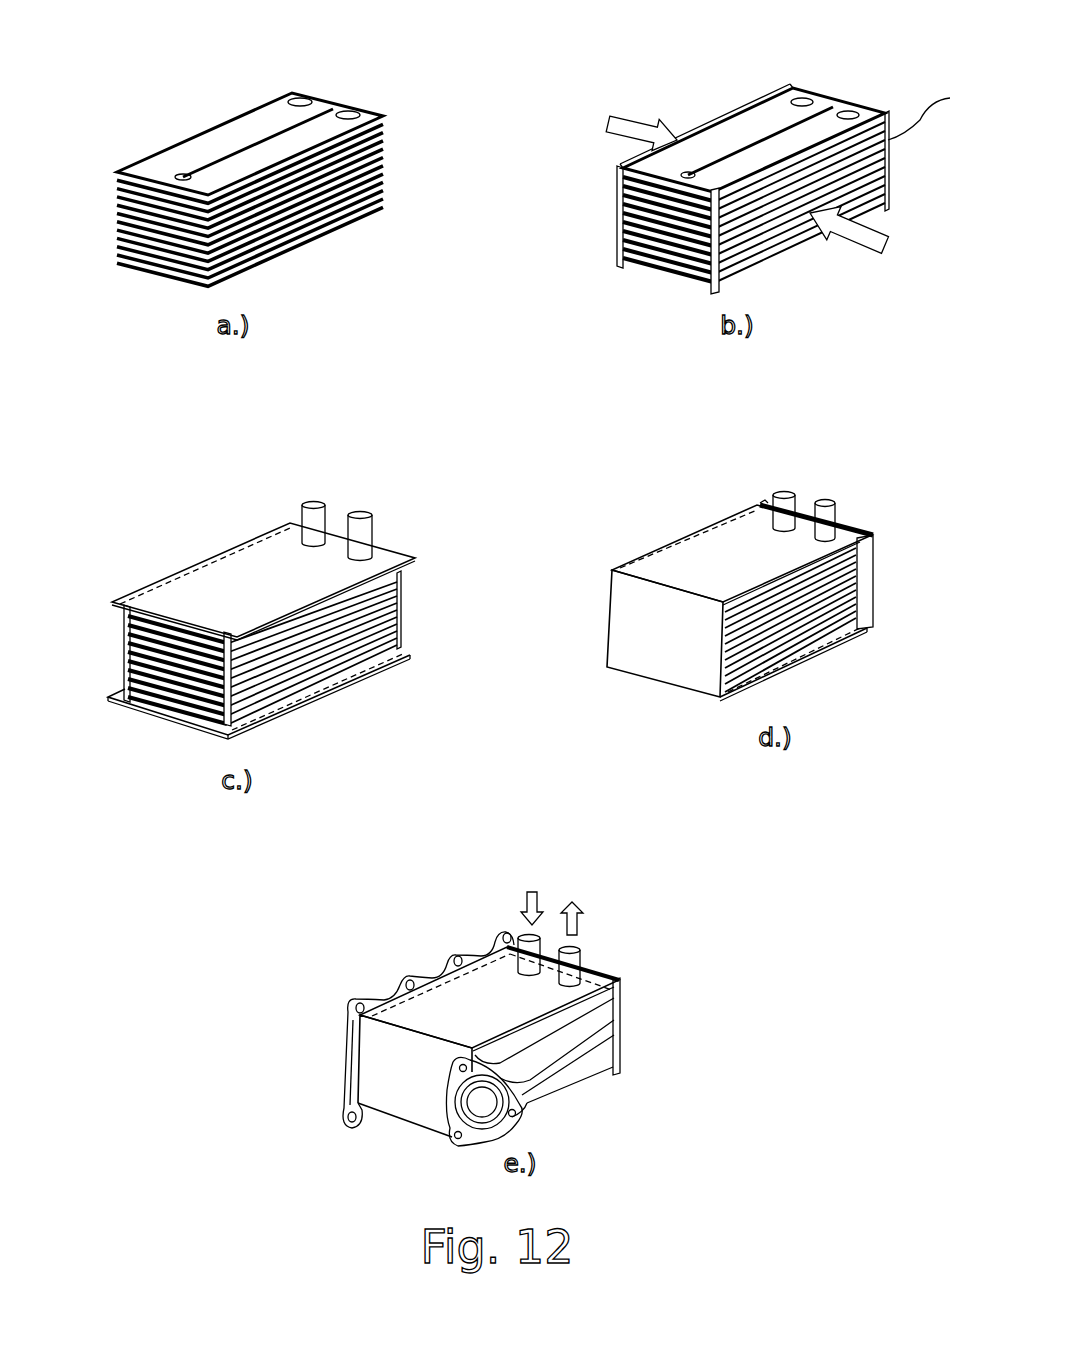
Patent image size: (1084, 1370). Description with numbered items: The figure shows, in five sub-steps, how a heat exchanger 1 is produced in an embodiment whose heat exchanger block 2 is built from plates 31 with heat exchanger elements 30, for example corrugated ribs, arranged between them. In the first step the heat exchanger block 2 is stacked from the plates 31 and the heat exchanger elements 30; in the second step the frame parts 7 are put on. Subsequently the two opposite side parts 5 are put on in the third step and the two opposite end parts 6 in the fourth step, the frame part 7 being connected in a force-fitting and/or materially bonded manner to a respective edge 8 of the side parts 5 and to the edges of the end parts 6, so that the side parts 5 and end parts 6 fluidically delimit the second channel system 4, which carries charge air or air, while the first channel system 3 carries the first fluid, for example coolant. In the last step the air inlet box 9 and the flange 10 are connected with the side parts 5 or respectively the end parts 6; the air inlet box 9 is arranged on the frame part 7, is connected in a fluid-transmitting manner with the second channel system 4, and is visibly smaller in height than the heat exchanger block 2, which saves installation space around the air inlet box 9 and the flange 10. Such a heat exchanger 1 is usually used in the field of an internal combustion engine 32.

The heat exchanger 1 is at (630, 964).
The heat exchanger block 2 is at (505, 610).
The first channel system 3 is at (313, 505).
The second channel system 4 is at (460, 1140).
The side parts 5 is at (232, 573).
The end parts 6 is at (877, 603).
The frame part 7 is at (755, 100).
The edge 8 is at (397, 577).
The air inlet box 9 is at (604, 1040).
The flange 10 is at (348, 1067).
The heat exchanger elements 30 is at (385, 118).
The plates 31 is at (205, 147).
The internal combustion engine 32 is at (414, 940).